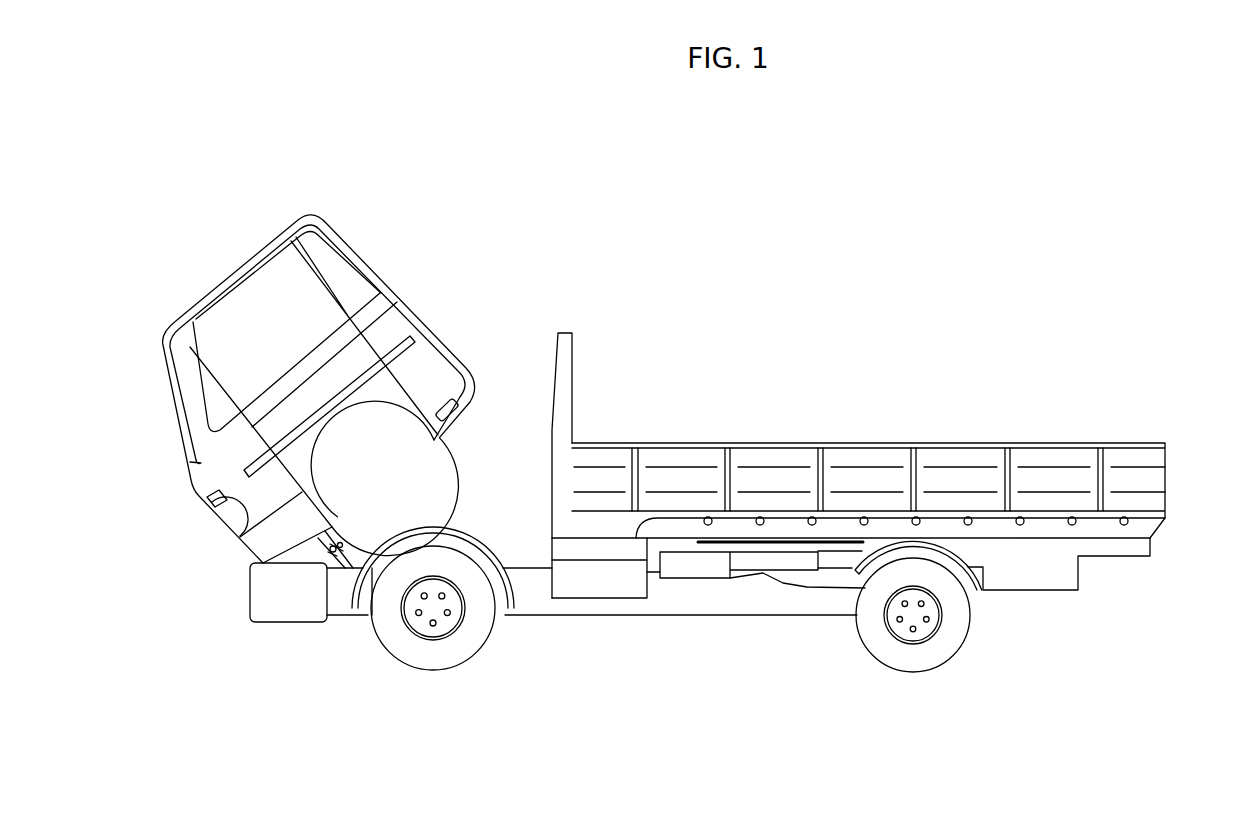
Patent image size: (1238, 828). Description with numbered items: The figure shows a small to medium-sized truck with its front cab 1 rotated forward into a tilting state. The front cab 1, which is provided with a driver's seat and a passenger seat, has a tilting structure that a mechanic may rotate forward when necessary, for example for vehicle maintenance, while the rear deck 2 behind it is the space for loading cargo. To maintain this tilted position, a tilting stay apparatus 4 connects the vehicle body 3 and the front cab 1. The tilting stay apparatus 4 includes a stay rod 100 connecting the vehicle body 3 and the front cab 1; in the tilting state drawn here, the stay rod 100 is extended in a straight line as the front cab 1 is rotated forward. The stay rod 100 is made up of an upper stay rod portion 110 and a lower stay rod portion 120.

The front cab 1 is at (232, 278).
The rear deck 2 is at (862, 442).
The vehicle body 3 is at (343, 605).
The tilting stay apparatus 4 is at (347, 549).
The stay rod 100 is at (244, 619).
The upper stay rod portion 110 is at (322, 550).
The lower stay rod portion 120 is at (338, 562).